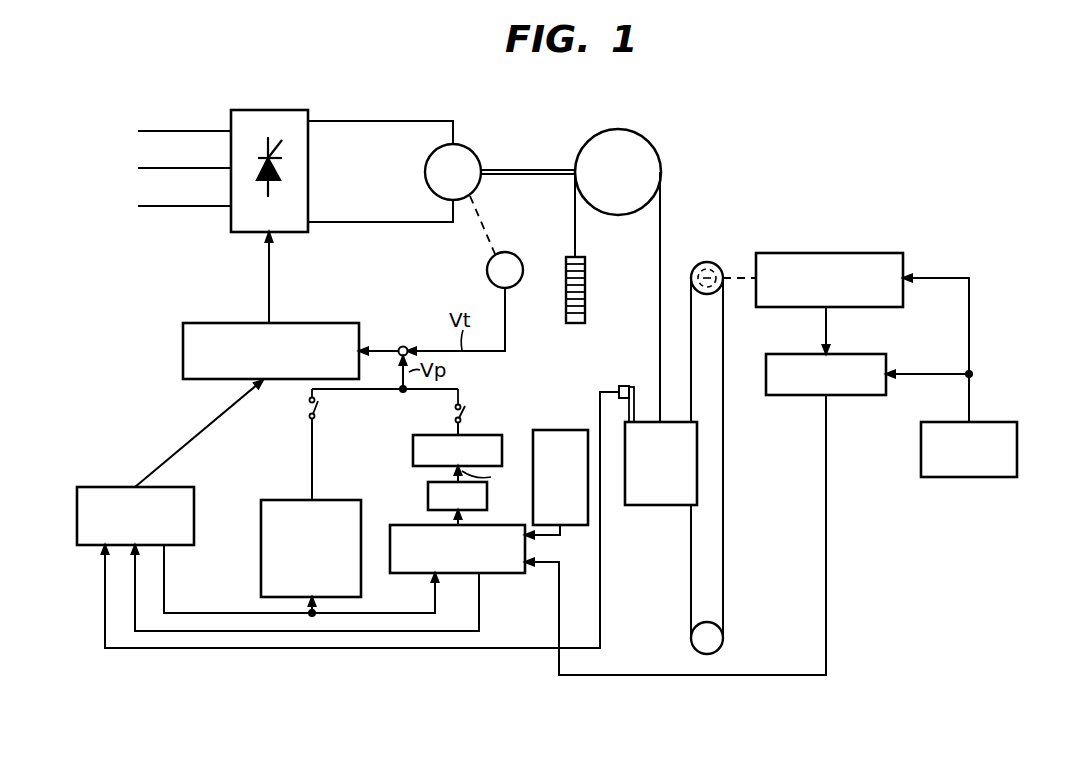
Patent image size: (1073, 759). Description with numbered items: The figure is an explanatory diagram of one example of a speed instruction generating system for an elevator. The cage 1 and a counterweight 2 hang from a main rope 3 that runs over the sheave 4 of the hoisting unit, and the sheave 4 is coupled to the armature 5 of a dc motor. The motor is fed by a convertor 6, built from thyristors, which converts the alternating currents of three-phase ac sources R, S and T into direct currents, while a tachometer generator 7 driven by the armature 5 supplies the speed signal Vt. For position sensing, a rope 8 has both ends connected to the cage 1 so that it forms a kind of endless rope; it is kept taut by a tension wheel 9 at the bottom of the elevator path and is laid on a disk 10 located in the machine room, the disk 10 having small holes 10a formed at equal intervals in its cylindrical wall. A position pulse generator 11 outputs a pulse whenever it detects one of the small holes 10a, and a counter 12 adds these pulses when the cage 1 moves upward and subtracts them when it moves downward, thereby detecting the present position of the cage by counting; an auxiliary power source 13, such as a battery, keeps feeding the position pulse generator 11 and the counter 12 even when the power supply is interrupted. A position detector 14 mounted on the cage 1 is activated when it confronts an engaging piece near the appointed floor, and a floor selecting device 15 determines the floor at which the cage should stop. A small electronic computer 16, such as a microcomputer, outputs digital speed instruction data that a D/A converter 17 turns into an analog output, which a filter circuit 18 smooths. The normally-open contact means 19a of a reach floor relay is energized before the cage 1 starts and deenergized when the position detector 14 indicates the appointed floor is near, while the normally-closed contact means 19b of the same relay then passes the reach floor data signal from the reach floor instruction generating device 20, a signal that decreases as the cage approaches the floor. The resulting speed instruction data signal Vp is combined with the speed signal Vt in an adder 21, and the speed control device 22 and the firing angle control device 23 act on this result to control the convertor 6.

The cage 1 is at (650, 506).
The counterweight 2 is at (585, 297).
The main rope 3 is at (661, 218).
The sheave 4 is at (655, 148).
The armature of dc motor 5 is at (473, 148).
The convertor 6 is at (282, 110).
The tachometer generator 7 is at (518, 256).
The rope 8 is at (692, 378).
The tension wheel 9 is at (722, 643).
The disk 10 is at (716, 265).
The small holes 10a is at (697, 266).
The position pulse generator 11 is at (813, 253).
The counter 12 is at (878, 354).
The auxiliary power source 13 is at (1017, 440).
The position detector 14 is at (624, 386).
The floor selecting device 15 is at (559, 429).
The electronic computer 16 is at (507, 574).
The D/A converter 17 is at (428, 494).
The filter circuit 18 is at (413, 440).
The normally-open contact means 19a is at (466, 412).
The normally-closed contact means 19b is at (308, 407).
The reach floor instruction generating device 20 is at (261, 560).
The adder 21 is at (399, 348).
The speed control device 22 is at (197, 492).
The firing angle control device 23 is at (318, 323).